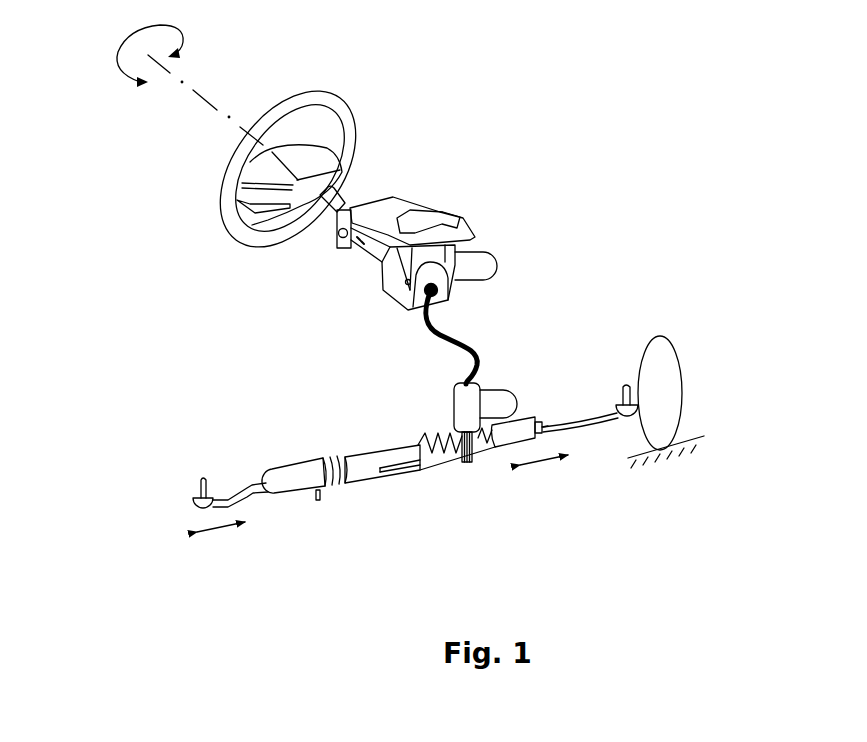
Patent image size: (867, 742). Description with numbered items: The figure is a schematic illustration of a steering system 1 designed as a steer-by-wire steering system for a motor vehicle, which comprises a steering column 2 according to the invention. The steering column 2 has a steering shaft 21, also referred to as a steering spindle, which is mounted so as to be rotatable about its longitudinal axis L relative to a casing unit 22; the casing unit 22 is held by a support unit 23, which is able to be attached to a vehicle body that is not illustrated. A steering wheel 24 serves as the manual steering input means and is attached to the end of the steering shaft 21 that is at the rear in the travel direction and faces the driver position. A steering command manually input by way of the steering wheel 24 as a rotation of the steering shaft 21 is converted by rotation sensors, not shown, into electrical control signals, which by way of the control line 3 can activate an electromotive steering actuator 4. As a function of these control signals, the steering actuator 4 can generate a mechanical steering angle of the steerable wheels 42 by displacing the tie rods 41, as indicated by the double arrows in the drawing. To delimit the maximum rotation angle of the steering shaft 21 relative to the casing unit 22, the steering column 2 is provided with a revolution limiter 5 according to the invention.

The steering system 1 is at (650, 154).
The steering column 2 is at (494, 177).
The control line 3 is at (457, 340).
The electromotive steering actuator 4 is at (440, 425).
The revolution limiter 5 is at (415, 298).
The steering shaft 21 is at (341, 197).
The casing unit 22 is at (373, 240).
The support unit 23 is at (400, 207).
The steering wheel 24 is at (345, 118).
The tie rods 41 is at (250, 498).
The steerable wheels 42 is at (668, 383).
The longitudinal axis L is at (217, 110).